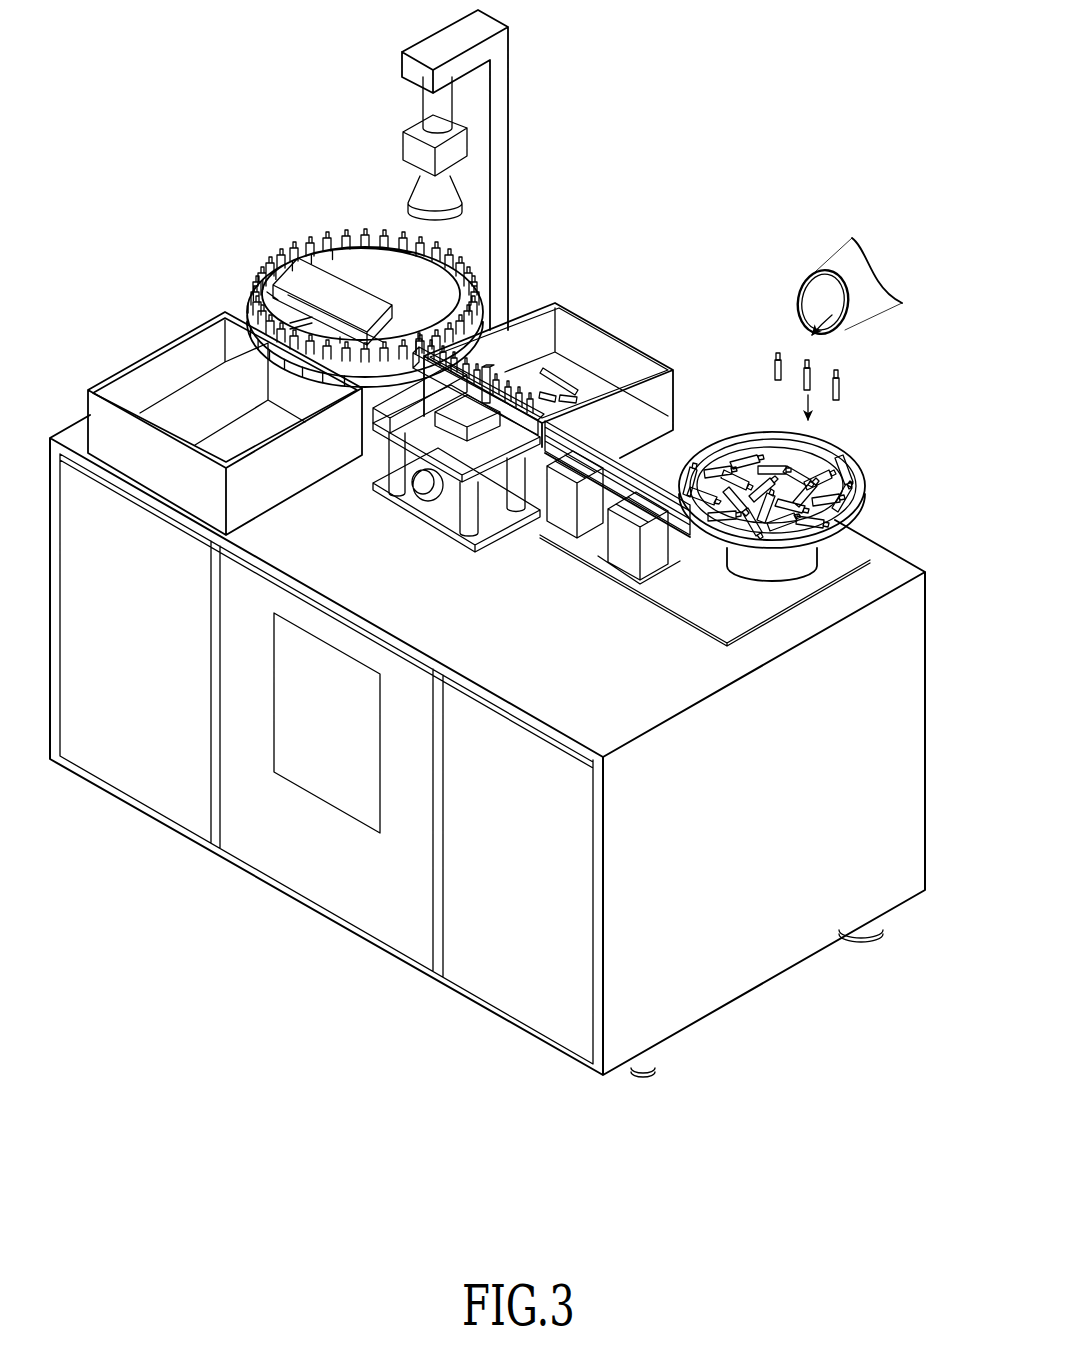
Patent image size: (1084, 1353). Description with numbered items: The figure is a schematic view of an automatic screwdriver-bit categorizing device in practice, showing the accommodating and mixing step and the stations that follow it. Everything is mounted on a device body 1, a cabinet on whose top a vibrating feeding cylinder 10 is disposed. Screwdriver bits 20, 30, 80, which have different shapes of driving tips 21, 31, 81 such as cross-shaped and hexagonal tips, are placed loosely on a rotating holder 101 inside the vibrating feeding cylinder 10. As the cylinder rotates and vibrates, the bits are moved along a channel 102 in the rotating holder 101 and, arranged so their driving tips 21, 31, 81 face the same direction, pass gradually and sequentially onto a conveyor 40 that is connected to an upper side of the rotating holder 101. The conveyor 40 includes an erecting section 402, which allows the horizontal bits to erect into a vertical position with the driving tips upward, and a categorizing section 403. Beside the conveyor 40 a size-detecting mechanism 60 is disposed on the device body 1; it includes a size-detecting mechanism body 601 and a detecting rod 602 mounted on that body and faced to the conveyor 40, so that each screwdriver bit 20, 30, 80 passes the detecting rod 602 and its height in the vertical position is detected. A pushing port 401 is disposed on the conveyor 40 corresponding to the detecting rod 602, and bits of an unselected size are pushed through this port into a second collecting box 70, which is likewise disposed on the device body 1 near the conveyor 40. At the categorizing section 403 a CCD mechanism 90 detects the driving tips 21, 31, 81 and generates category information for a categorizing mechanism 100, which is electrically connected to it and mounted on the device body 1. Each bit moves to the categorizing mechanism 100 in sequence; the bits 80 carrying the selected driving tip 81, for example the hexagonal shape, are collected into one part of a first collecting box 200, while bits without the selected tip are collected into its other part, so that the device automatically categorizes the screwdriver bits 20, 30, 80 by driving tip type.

The device body 1 is at (787, 1002).
The vibrating feeding cylinder 10 is at (820, 551).
The rotating holder 101 is at (830, 507).
The channel 102 is at (857, 490).
The screwdriver bit 20 is at (777, 365).
The driving tip 21 is at (806, 360).
The screwdriver bit 30 is at (748, 363).
The driving tip 31 is at (777, 355).
The conveyor 40 is at (552, 394).
The pushing port 401 is at (505, 385).
The erecting section 402 is at (618, 434).
The categorizing section 403 is at (478, 326).
The size-detecting mechanism 60 is at (467, 511).
The size-detecting mechanism body 601 is at (495, 500).
The detecting rod 602 is at (477, 397).
The second collecting box 70 is at (680, 358).
The screwdriver bit 80 is at (873, 380).
The driving tip 81 is at (838, 373).
The CCD mechanism 90 is at (523, 140).
The categorizing mechanism 100 is at (333, 265).
The first collecting box 200 is at (283, 498).